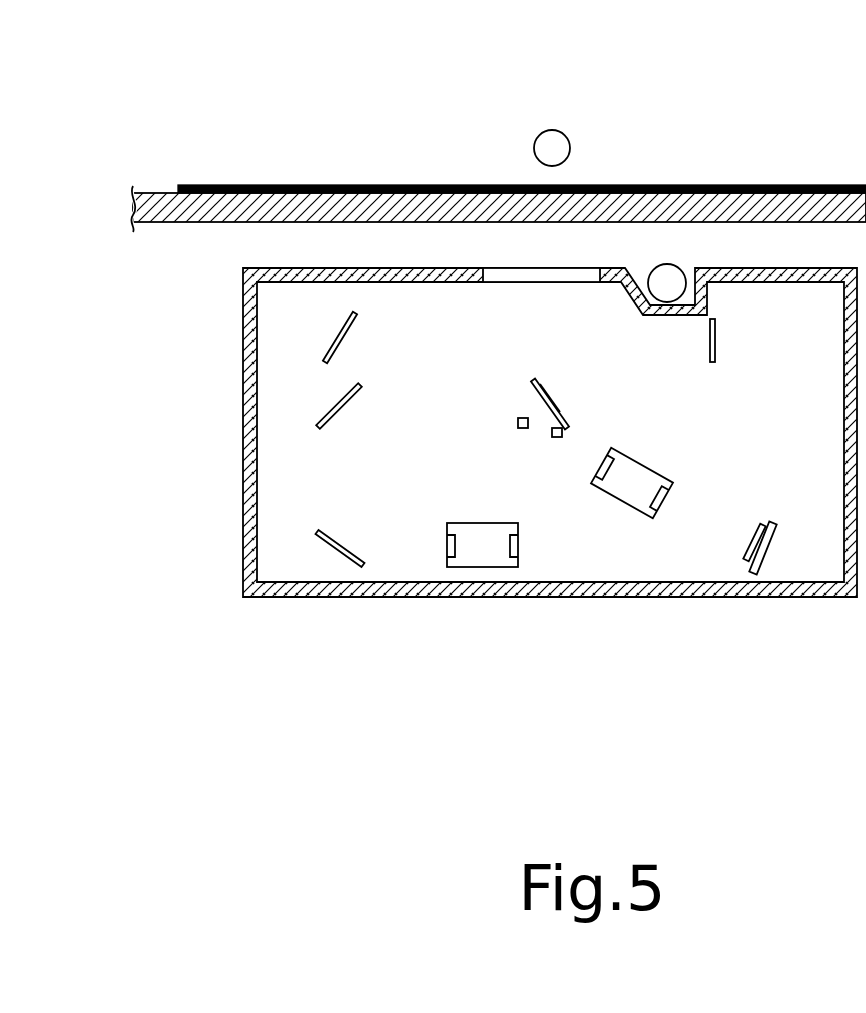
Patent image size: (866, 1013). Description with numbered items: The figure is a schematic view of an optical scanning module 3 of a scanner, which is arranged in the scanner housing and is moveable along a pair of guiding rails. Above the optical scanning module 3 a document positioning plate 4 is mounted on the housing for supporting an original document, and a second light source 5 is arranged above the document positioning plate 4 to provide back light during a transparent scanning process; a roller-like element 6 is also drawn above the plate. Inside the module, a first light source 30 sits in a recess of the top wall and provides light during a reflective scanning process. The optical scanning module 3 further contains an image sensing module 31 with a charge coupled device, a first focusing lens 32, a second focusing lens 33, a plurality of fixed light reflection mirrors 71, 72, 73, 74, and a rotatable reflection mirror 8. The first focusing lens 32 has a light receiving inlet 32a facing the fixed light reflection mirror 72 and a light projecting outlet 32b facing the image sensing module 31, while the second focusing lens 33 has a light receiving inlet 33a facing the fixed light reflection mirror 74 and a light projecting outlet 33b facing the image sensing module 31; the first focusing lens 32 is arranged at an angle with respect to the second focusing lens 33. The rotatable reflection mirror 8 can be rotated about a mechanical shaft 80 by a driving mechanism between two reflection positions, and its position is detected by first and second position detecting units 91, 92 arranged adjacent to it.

The optical scanning module 3 is at (243, 545).
The document positioning plate 4 is at (277, 200).
The second light source 5 is at (382, 185).
The feed roller 6 is at (551, 140).
The first light source 30 is at (667, 273).
The image sensing module 31 is at (767, 550).
The first focusing lens 32 is at (643, 589).
The light receiving inlet 32a is at (592, 480).
The light projecting outlet 32b is at (657, 507).
The second focusing lens 33 is at (473, 632).
The light receiving inlet 33a is at (448, 553).
The light projecting outlet 33b is at (517, 552).
The fixed light reflection mirror 71 is at (716, 352).
The fixed light reflection mirror 72 is at (323, 358).
The fixed light reflection mirror 73 is at (319, 421).
The fixed light reflection mirror 74 is at (320, 543).
The rotatable reflection mirror 8 is at (538, 385).
The mechanical shaft 80 is at (552, 400).
The first position detecting unit 91 is at (562, 432).
The second position detecting unit 92 is at (522, 428).